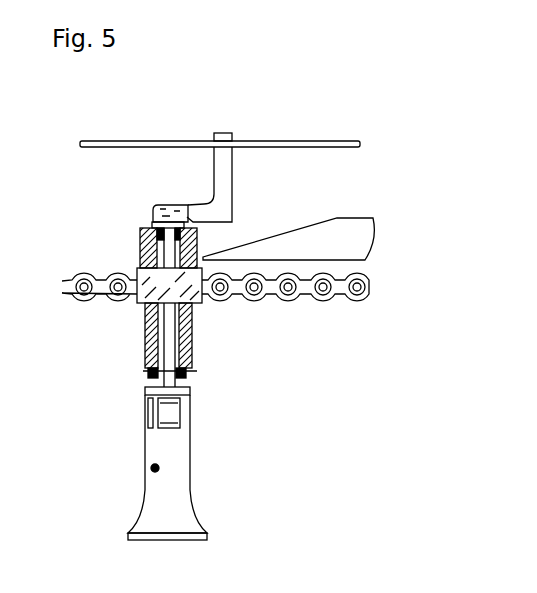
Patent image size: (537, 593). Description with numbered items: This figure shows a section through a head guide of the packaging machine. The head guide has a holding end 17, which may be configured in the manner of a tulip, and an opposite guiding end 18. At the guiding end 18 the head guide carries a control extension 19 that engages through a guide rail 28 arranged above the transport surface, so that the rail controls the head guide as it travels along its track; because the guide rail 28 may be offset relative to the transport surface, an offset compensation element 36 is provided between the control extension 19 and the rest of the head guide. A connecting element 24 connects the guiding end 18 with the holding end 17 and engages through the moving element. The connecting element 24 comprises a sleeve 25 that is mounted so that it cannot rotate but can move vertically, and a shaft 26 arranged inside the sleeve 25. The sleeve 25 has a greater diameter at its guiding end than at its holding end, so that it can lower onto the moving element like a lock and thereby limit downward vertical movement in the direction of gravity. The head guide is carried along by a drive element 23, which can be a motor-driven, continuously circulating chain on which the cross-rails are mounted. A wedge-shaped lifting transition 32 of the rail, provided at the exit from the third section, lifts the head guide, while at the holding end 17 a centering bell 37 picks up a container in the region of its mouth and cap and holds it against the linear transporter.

The guide rail 28 is at (292, 142).
The control extension 19 is at (232, 177).
The offset compensation element 36 is at (203, 206).
The wedge-shaped lifting transition 32 is at (355, 232).
The sleeve 25 is at (144, 332).
The connecting element 24 is at (187, 340).
The shaft 26 is at (165, 352).
The drive element 23 is at (361, 287).
The centering bell 37 is at (155, 468).
The guiding end 18 is at (510, 210).
The holding end 17 is at (377, 492).